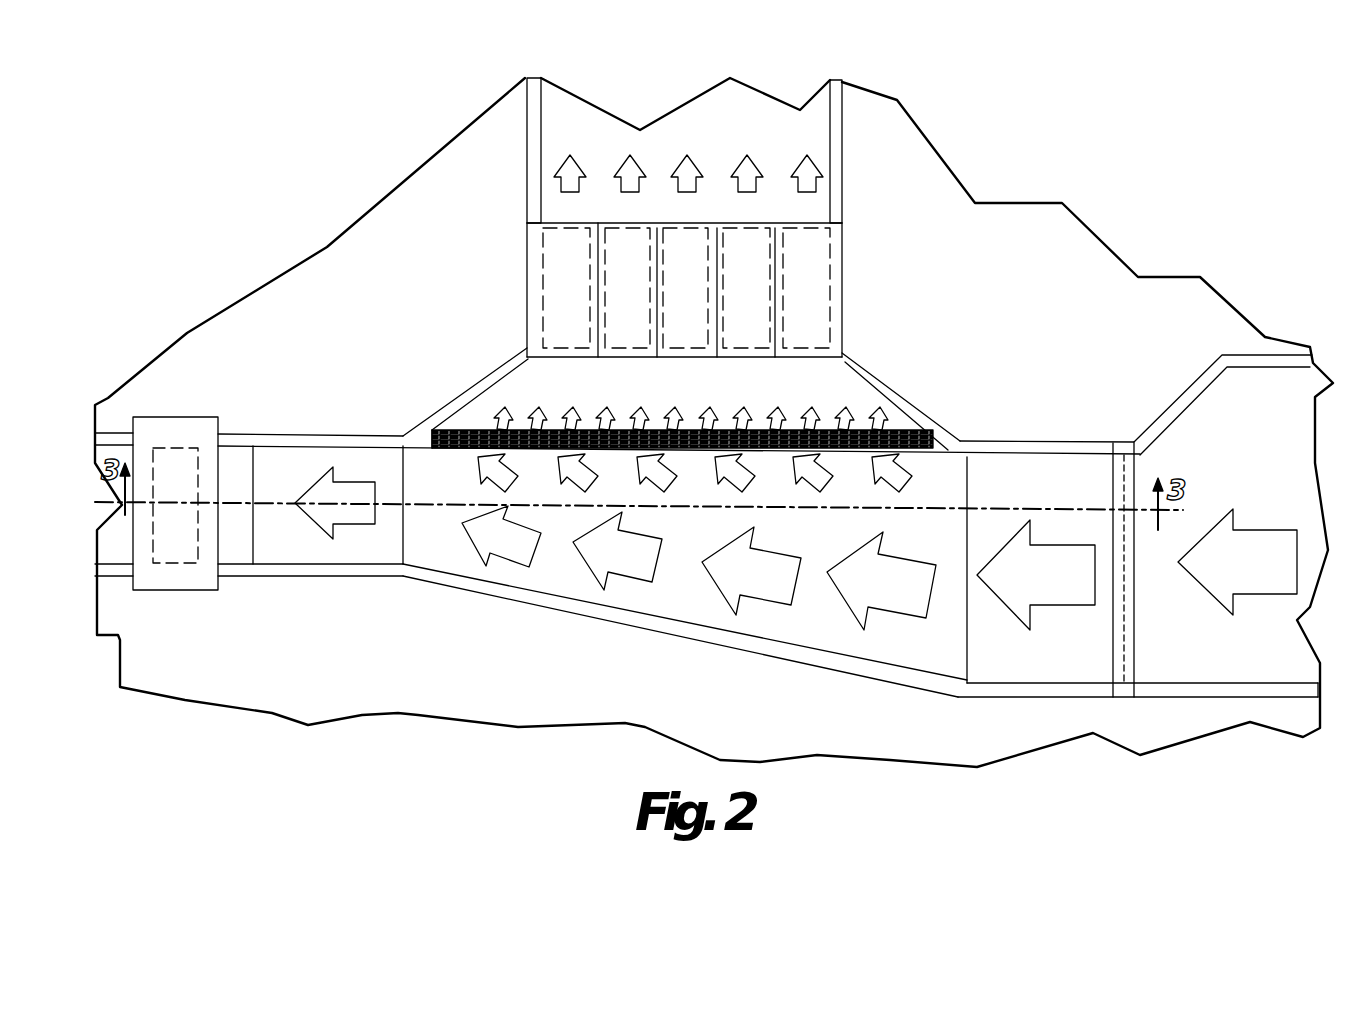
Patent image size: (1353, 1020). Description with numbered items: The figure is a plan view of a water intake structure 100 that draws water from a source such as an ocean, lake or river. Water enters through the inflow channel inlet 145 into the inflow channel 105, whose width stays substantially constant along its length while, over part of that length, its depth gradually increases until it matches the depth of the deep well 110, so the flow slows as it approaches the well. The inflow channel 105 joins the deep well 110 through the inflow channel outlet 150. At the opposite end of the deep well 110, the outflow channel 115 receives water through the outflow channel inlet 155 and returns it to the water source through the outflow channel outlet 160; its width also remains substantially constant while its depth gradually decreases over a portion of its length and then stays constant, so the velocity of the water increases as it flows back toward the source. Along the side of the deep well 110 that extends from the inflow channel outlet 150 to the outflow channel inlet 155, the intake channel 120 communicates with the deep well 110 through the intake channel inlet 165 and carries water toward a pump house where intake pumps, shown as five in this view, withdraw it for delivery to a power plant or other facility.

The water intake structure 100 is at (985, 350).
The inflow channel 105 is at (1040, 667).
The deep well 110 is at (853, 630).
The outflow channel 115 is at (292, 455).
The intake channel 120 is at (736, 230).
The inflow channel inlet 145 is at (1143, 483).
The inflow channel outlet 150 is at (970, 473).
The outflow channel inlet 155 is at (403, 470).
The outflow channel outlet 160 is at (128, 455).
The intake channel inlet 165 is at (473, 428).